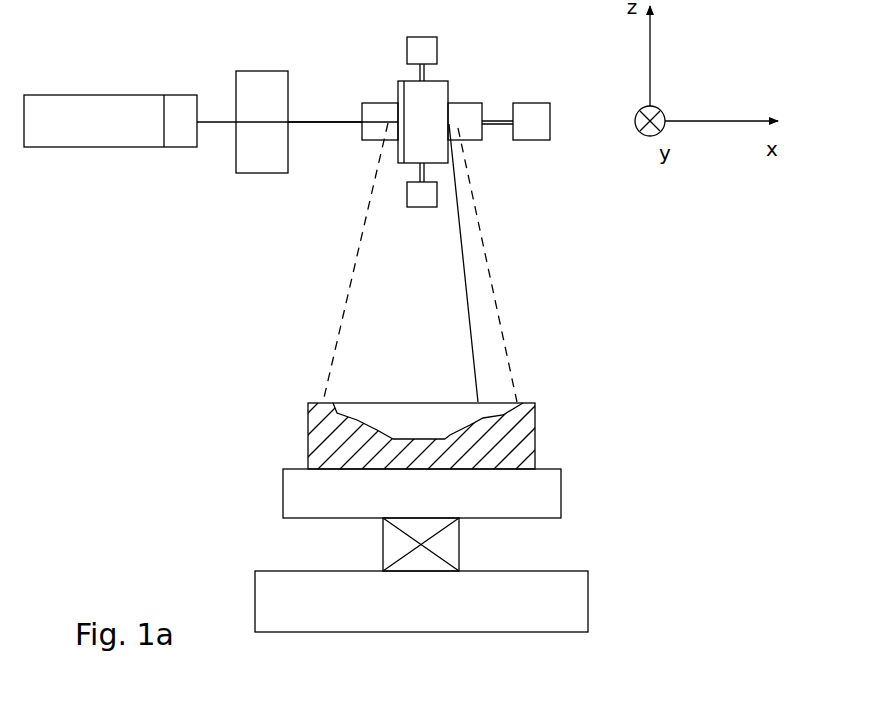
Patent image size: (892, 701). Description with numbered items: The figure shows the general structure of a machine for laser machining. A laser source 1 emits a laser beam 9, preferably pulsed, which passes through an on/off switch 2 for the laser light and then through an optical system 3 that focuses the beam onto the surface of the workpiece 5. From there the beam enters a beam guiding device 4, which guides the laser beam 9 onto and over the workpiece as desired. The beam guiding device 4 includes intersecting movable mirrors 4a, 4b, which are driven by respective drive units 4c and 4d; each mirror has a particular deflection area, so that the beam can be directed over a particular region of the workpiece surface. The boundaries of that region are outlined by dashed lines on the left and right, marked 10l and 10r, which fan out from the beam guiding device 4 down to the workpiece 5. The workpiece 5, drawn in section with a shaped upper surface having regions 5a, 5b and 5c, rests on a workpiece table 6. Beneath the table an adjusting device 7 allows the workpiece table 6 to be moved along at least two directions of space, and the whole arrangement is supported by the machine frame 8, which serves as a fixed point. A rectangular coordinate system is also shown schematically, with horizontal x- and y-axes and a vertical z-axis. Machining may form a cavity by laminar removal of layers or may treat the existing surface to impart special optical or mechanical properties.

The laser source 1 is at (68, 141).
The on/off switch 2 is at (182, 141).
The optical system 3 is at (263, 171).
The beam guiding device 4 is at (457, 105).
The movable mirror 4a is at (477, 103).
The movable mirror 4b is at (398, 90).
The drive unit 4c is at (530, 107).
The drive unit 4d is at (437, 50).
The workpiece 5 is at (408, 407).
The left surface region of workpiece 5a is at (323, 401).
The central flat region of workpiece 5b is at (420, 402).
The right surface region of workpiece 5c is at (518, 400).
The workpiece table 6 is at (561, 492).
The adjusting device 7 is at (459, 540).
The machine frame 8 is at (588, 598).
The laser beam 9 is at (222, 120).
The left boundary of the deflection area 10l is at (362, 232).
The right boundary of the deflection area 10r is at (477, 213).